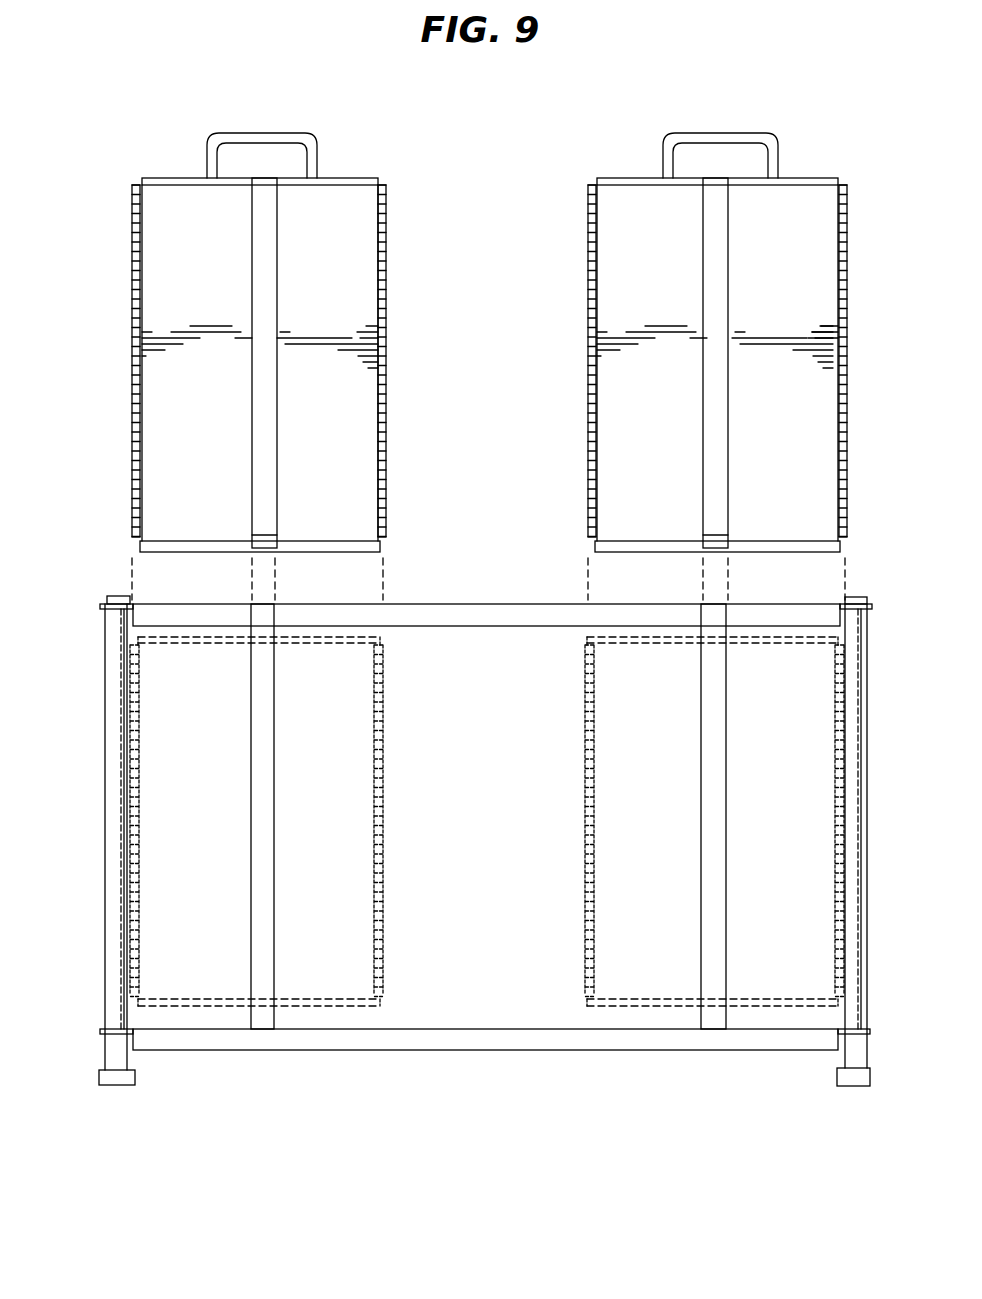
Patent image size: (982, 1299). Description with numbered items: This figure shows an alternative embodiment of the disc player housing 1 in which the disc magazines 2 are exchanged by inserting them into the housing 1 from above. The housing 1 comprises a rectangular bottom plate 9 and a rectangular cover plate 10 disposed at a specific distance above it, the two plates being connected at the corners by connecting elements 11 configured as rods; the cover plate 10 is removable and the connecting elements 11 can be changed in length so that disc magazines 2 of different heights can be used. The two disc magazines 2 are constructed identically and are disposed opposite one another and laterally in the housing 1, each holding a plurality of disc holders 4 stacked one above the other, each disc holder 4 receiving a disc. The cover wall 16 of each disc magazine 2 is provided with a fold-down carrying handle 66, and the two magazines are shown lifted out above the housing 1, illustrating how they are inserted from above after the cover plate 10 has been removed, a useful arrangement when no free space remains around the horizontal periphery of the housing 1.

The housing 1 is at (477, 812).
The disc magazine 2 is at (383, 873).
The disc holder 4 is at (387, 341).
The bottom plate 9 is at (495, 1050).
The cover plate 10 is at (535, 606).
The connecting element 11 is at (112, 800).
The cover wall 16 is at (355, 178).
The carrying handle 66 is at (289, 132).